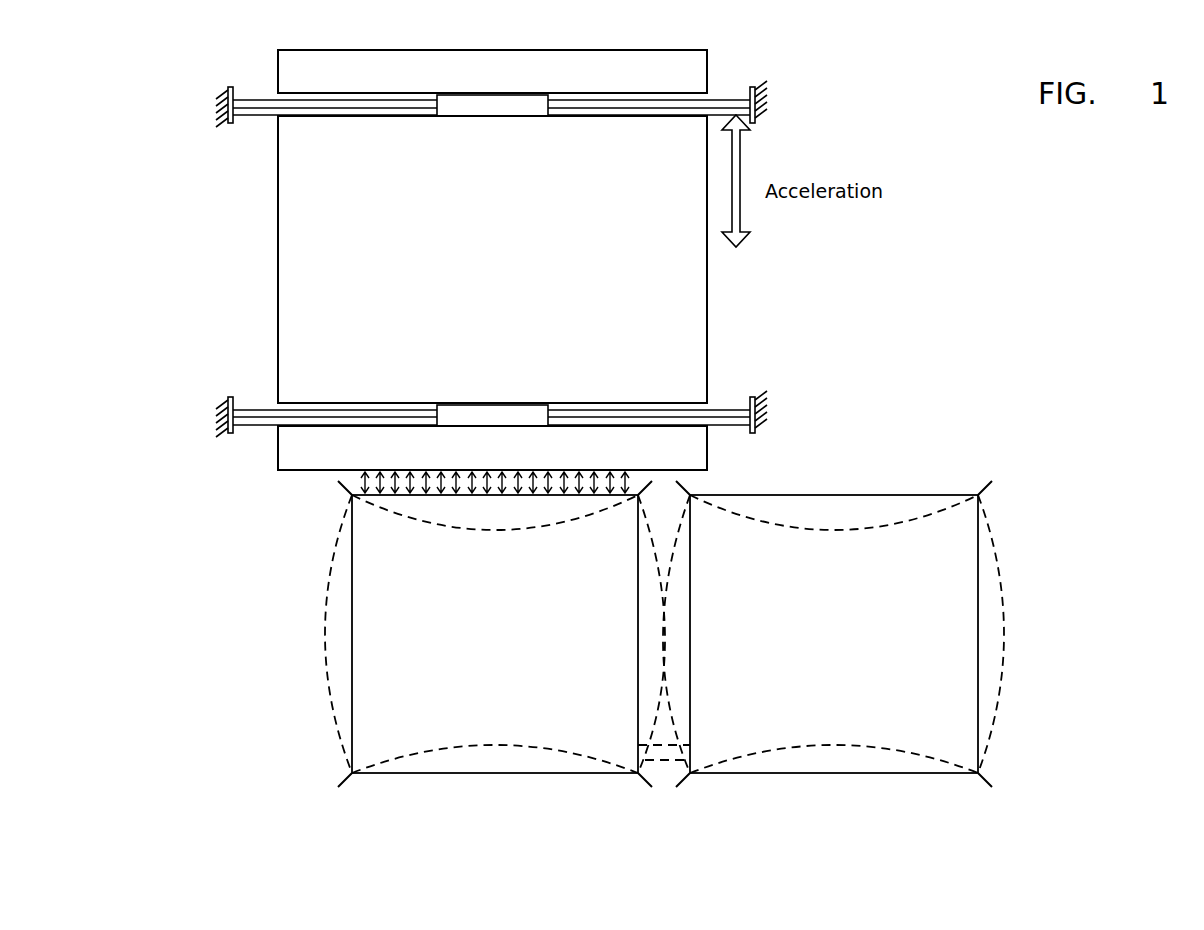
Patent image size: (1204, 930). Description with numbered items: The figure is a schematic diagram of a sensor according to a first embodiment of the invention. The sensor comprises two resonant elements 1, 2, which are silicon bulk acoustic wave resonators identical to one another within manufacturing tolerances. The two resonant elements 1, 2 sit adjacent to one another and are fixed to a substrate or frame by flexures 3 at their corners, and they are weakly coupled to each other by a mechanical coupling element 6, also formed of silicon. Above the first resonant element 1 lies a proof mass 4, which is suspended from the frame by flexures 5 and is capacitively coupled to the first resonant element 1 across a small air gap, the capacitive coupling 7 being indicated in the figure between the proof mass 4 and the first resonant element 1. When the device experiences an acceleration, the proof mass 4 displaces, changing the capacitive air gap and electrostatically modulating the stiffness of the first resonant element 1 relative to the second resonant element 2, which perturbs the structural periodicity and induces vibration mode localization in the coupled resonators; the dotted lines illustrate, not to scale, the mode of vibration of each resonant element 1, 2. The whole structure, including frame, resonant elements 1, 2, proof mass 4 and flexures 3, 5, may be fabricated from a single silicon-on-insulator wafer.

The first resonant element 1 is at (497, 760).
The second resonant element 2 is at (830, 760).
The flexures 3 is at (352, 495).
The proof mass 4 is at (665, 306).
The flexures 5 is at (258, 100).
The mechanical coupling element 6 is at (668, 760).
The electrostatic force field 7 is at (390, 497).